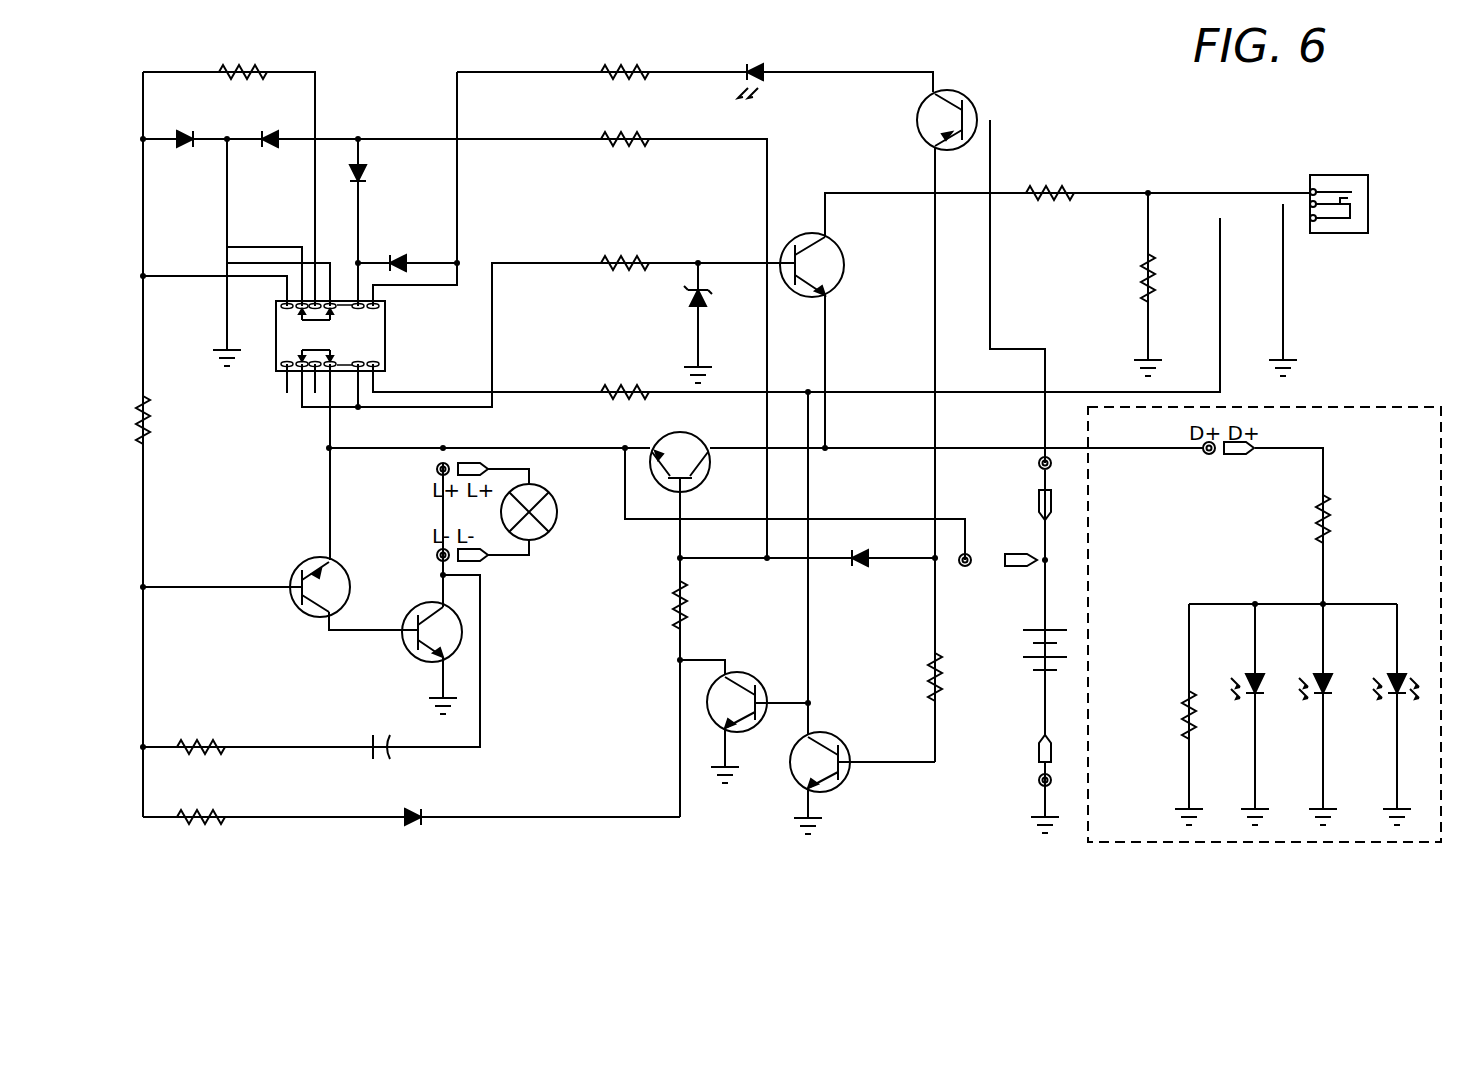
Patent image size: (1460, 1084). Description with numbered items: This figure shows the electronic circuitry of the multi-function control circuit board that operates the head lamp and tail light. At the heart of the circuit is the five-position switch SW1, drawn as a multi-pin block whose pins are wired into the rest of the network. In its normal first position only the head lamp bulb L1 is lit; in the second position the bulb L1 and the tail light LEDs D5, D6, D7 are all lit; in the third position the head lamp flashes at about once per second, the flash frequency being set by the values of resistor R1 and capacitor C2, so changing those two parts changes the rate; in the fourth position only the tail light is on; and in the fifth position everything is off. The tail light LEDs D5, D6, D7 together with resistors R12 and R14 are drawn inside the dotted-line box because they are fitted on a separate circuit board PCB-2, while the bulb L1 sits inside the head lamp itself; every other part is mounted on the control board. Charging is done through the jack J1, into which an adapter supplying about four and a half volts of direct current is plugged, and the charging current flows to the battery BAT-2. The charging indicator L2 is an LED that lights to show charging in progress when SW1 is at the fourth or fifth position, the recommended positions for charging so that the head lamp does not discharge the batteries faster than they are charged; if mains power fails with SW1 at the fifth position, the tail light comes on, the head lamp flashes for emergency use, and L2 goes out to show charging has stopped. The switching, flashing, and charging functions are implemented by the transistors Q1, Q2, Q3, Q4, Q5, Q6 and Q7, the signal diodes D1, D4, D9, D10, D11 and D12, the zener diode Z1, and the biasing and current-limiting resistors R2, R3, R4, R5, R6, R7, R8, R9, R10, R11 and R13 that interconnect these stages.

The resistor R1 is at (196, 745).
The resistor R2 is at (196, 815).
The resistor R3 is at (620, 599).
The resistor R4 is at (881, 674).
The resistor 10K 1/8W R5 is at (156, 422).
The resistor R6 is at (238, 72).
The resistor R7 is at (618, 139).
The resistor R8 is at (618, 72).
The resistor R9 is at (613, 263).
The resistor R10 is at (616, 394).
The resistor R11 is at (1052, 192).
The resistor R12 is at (1264, 516).
The resistor R13 is at (1096, 275).
The resistor R14 is at (1142, 710).
The diode D1 is at (854, 560).
The diode D4 is at (182, 166).
The tail light LED D5 is at (1255, 681).
The tail light LED D6 is at (1322, 681).
The tail light LED D7 is at (1396, 681).
The diode D9 is at (413, 820).
The diode D10 is at (267, 166).
The diode D11 is at (397, 170).
The diode D12 is at (409, 237).
The transistor Q1 is at (276, 595).
The transistor Q2 is at (374, 646).
The transistor Q3 is at (702, 473).
The transistor Q4 is at (850, 276).
The transistor Q5 is at (974, 91).
The transistor Q6 is at (751, 667).
The transistor Q7 is at (867, 765).
The bulb L1 is at (585, 527).
The charging indicator L2 is at (773, 72).
The zener diode Z1 is at (647, 321).
The capacitor C2 is at (342, 745).
The switch SW1 is at (376, 336).
The jack J1 is at (1349, 217).
The battery 3V BAT-2 is at (1015, 628).
The circuit board PCB 2 PCB-2 is at (1264, 640).